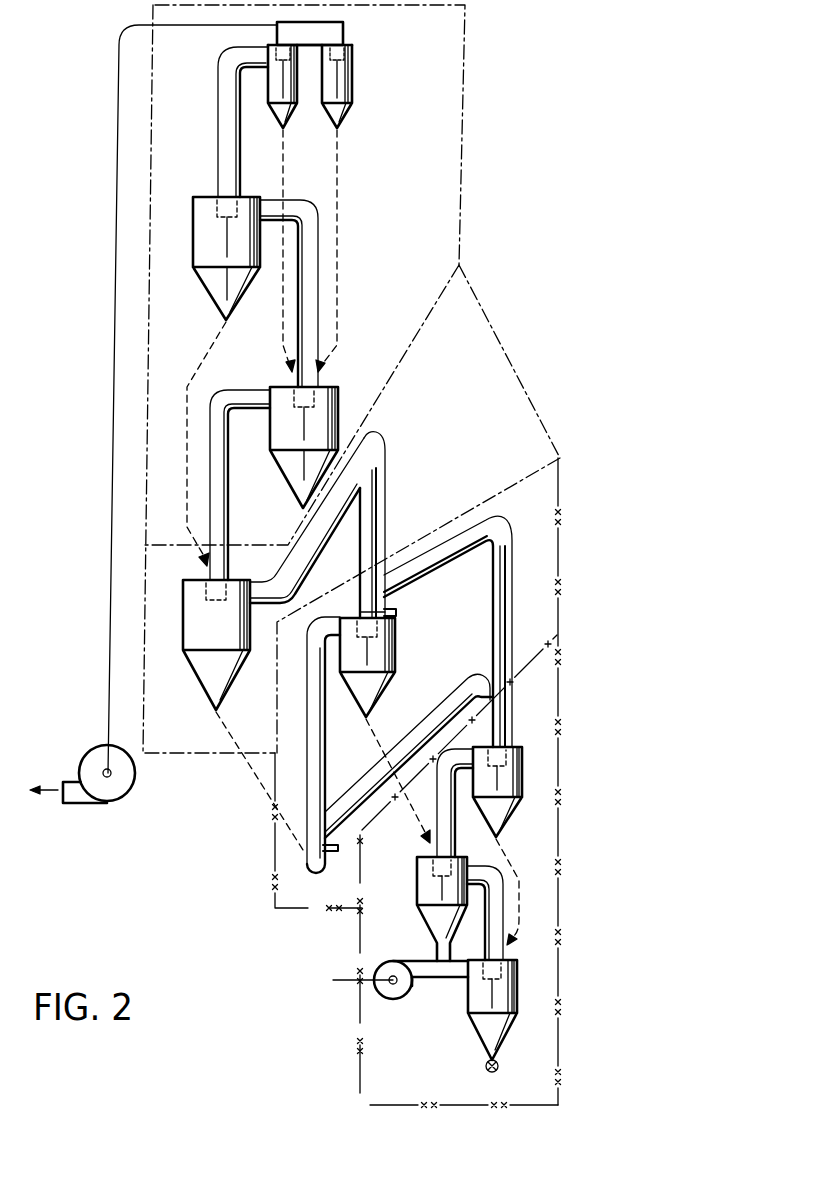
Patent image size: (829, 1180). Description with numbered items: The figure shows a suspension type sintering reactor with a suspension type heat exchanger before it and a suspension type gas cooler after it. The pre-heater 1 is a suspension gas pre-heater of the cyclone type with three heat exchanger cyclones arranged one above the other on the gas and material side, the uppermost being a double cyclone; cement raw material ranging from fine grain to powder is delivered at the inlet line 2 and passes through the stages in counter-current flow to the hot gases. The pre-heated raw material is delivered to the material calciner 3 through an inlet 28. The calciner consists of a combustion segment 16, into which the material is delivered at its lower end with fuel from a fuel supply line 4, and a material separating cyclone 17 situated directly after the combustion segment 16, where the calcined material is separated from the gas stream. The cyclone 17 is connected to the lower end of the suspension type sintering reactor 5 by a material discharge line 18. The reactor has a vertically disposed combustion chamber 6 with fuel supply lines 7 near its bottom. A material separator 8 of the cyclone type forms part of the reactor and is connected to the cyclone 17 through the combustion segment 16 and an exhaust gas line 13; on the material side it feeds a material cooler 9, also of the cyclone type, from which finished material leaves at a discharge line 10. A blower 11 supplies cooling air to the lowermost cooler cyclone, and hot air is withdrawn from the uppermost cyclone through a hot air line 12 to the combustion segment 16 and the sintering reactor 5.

The pre-heater 1 is at (465, 60).
The inlet 2 is at (215, 188).
The material calciner 3 is at (486, 308).
The fuel supply line 4 is at (397, 610).
The suspension type sintering reactor 5 is at (550, 572).
The combustion chamber 6 is at (319, 742).
The fuel supply lines 7 is at (339, 850).
The material separator 8 is at (397, 645).
The material cooler 9 is at (557, 862).
The discharge line 10 is at (485, 1068).
The blower 11 is at (393, 999).
The hot air line 12 is at (506, 718).
The exhaust gas line 13 is at (271, 588).
The combustion segment 16 is at (386, 478).
The material separating cyclone 17 is at (201, 638).
The material discharge line 18 is at (258, 776).
The inlet 28 is at (357, 607).